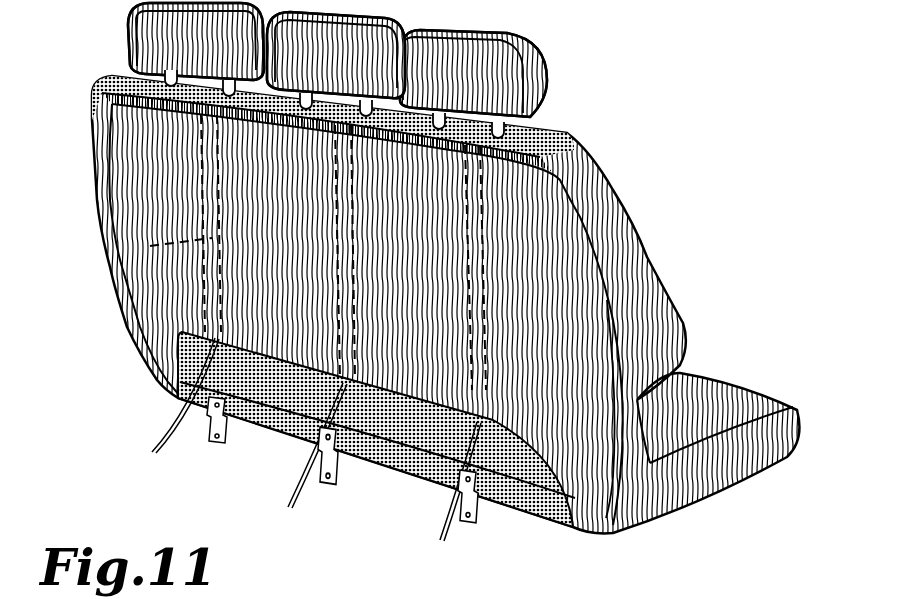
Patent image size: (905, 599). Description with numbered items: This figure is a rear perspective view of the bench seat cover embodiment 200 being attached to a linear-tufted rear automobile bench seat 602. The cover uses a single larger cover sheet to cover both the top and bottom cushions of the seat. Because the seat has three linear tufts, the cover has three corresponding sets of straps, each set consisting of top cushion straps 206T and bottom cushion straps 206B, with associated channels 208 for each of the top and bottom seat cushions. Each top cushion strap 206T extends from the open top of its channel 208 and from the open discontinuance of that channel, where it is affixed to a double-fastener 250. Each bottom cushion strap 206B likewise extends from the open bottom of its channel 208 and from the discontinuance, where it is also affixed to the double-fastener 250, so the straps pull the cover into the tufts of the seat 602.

The bench seat cover embodiment 200 is at (610, 217).
The tufted automobile bench seat 602 is at (666, 263).
The channels 208 is at (150, 246).
The top cushion straps 206T is at (290, 480).
The bottom cushion straps 206B is at (365, 480).
The double-fastener 250 is at (200, 440).